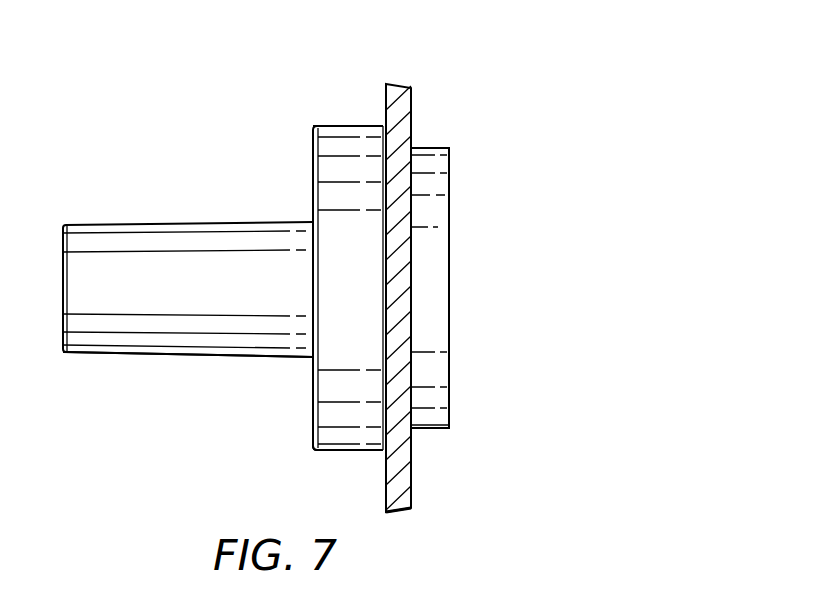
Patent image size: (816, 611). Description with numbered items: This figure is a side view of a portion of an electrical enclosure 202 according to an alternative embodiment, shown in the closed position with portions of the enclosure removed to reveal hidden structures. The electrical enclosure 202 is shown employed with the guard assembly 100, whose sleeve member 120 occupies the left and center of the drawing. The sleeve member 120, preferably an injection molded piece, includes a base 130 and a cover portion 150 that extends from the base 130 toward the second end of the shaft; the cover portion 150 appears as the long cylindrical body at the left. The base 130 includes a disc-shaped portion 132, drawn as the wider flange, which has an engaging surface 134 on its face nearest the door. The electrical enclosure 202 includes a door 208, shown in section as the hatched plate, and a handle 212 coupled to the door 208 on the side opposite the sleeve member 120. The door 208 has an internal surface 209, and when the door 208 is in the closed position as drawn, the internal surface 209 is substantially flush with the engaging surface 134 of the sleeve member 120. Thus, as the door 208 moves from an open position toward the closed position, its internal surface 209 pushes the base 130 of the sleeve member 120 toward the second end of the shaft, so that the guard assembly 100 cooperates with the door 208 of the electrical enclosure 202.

The guard assembly 100 is at (105, 148).
The sleeve member 120 is at (113, 222).
The cover portion 150 is at (155, 365).
The base 130 is at (317, 107).
The disc-shaped portion 132 is at (367, 110).
The engaging surface 134 is at (385, 455).
The door 208 is at (413, 100).
The internal surface 209 is at (383, 100).
The handle 212 is at (440, 147).
The electrical enclosure 202 is at (552, 301).